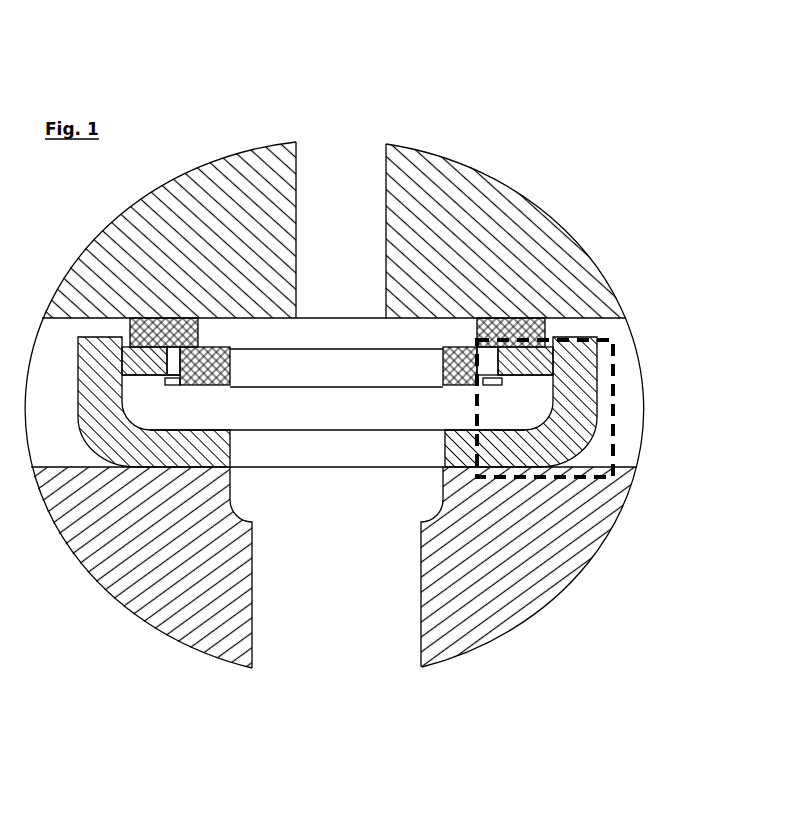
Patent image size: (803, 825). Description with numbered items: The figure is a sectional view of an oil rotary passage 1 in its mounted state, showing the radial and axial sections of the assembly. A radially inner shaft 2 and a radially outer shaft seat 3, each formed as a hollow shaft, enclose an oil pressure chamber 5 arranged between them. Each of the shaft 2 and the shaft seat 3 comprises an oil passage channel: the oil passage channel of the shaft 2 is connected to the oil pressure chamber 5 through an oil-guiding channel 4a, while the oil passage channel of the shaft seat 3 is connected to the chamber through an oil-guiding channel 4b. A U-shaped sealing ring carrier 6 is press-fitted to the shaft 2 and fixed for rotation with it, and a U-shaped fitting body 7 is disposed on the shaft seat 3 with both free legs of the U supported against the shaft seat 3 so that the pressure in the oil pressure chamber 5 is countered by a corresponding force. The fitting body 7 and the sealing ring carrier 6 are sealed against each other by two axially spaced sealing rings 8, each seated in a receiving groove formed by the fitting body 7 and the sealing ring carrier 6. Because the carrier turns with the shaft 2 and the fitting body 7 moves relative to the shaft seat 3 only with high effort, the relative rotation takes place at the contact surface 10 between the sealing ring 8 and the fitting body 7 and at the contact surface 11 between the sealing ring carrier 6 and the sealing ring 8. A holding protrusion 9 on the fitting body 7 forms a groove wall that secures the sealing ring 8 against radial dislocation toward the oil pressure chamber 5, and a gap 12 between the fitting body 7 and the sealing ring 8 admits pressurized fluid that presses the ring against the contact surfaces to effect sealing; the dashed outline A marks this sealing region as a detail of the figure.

The oil rotary passage 1 is at (398, 101).
The shaft 2 is at (503, 572).
The shaft seat 3 is at (452, 225).
The oil-guiding channel 4a is at (387, 575).
The oil-guiding channel 4b is at (343, 207).
The oil pressure chamber 5 is at (380, 420).
The sealing ring carrier 6 is at (502, 445).
The fitting body 7 is at (512, 330).
The sealing ring 8 is at (538, 375).
The holding protrusion 9 is at (500, 385).
The contact surface 10 is at (525, 348).
The contact surface 11 is at (553, 362).
The gap 12 is at (493, 360).
The detail region A is at (617, 406).